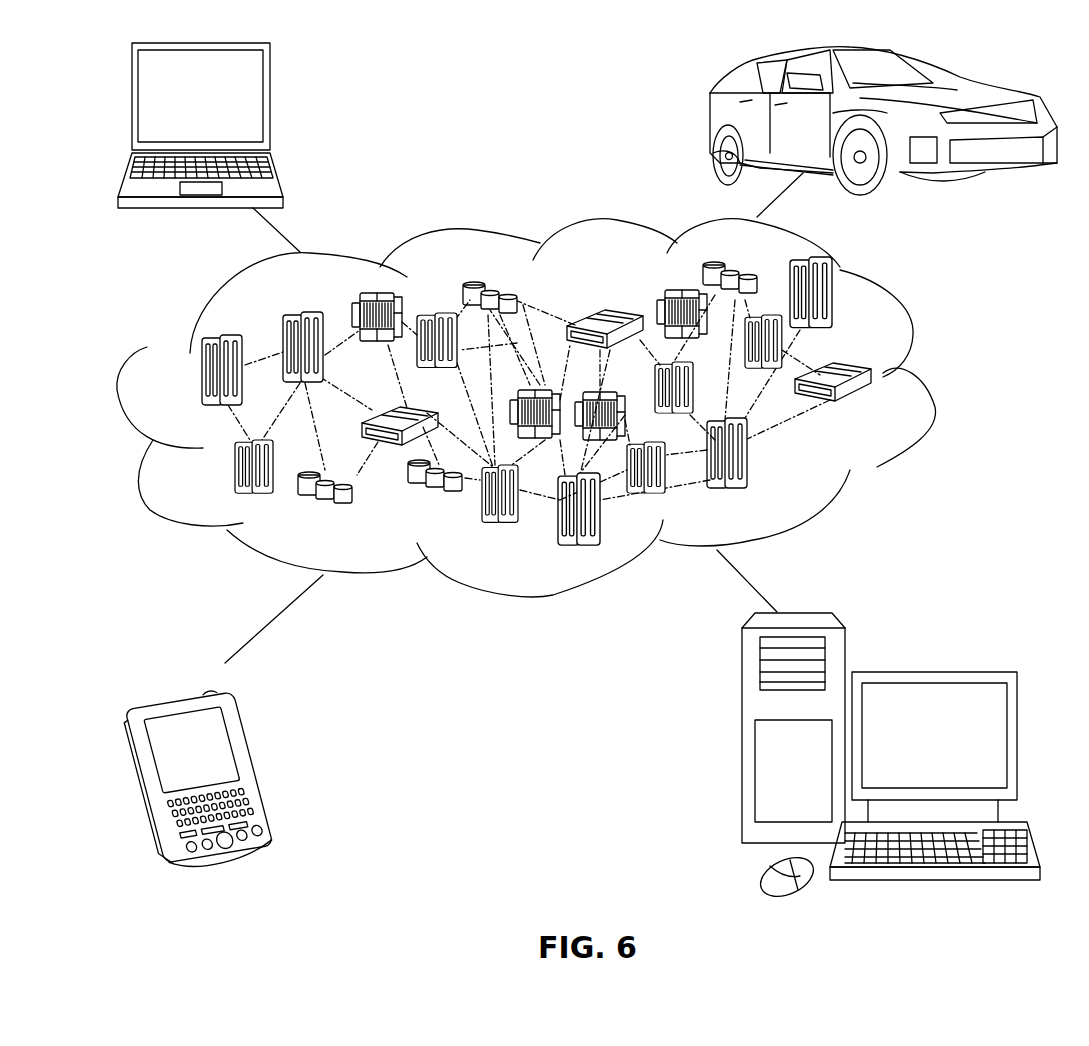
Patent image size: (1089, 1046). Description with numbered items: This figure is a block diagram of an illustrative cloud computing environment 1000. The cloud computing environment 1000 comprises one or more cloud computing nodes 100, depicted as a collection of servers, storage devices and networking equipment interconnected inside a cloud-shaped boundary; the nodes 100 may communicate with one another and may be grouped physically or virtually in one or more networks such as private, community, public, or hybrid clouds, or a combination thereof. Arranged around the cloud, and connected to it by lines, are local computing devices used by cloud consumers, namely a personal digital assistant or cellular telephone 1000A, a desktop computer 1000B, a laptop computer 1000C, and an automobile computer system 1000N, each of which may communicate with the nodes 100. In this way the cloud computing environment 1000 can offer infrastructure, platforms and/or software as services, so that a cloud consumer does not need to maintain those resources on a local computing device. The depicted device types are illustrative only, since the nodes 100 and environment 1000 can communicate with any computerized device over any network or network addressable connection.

The cloud computing nodes 100 is at (876, 410).
The cloud computing environment 1000 is at (933, 378).
The personal digital assistant (PDA) or cellular telephone 1000A is at (257, 765).
The desktop computer 1000B is at (930, 670).
The laptop computer 1000C is at (272, 105).
The automobile computer system 1000N is at (710, 120).